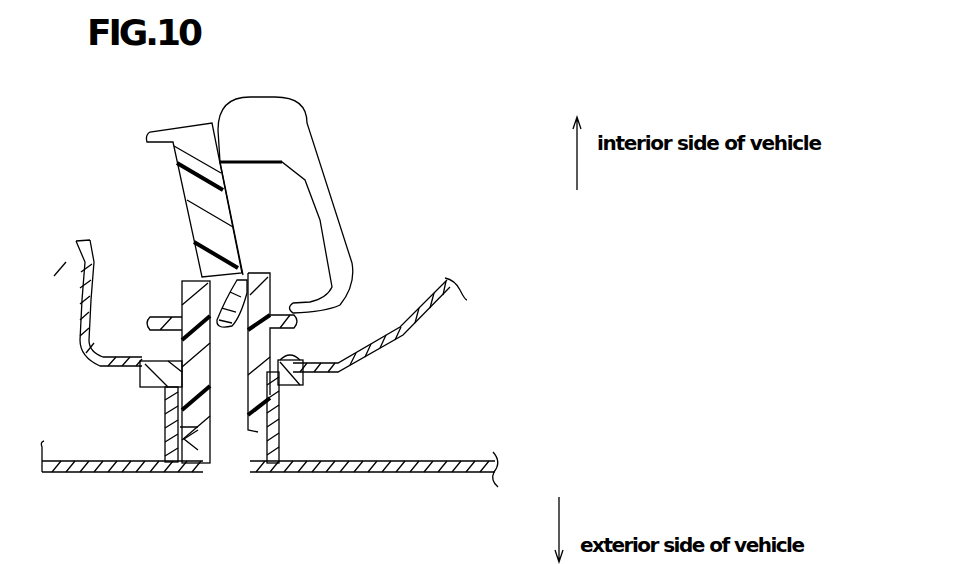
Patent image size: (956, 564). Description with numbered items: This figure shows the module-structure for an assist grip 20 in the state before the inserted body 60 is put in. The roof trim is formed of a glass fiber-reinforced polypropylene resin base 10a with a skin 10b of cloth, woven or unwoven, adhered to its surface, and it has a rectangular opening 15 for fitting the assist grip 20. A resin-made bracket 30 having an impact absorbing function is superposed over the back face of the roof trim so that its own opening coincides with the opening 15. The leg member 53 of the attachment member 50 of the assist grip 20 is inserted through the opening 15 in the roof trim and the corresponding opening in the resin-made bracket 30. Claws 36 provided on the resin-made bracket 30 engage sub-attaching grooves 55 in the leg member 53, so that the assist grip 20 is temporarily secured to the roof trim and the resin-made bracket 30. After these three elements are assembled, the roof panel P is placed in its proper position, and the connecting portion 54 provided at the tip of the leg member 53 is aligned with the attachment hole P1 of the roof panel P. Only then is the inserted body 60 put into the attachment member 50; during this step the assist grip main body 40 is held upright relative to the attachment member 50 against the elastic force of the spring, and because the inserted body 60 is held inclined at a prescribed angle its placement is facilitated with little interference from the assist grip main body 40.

The assist grip 20 is at (345, 158).
The assist grip main body 40 is at (323, 193).
The inserted body 60 is at (190, 197).
The attachment member 50 is at (178, 308).
The leg member 53 is at (187, 387).
The claw 36 is at (166, 403).
The resin-made bracket 30 is at (155, 461).
The connecting portion 54 is at (198, 453).
The sub-attaching groove 55 is at (248, 417).
The opening 15 is at (300, 372).
The base 10a is at (420, 318).
The skin 10b is at (425, 288).
The roof panel P is at (426, 474).
The attachment hole P1 is at (242, 470).